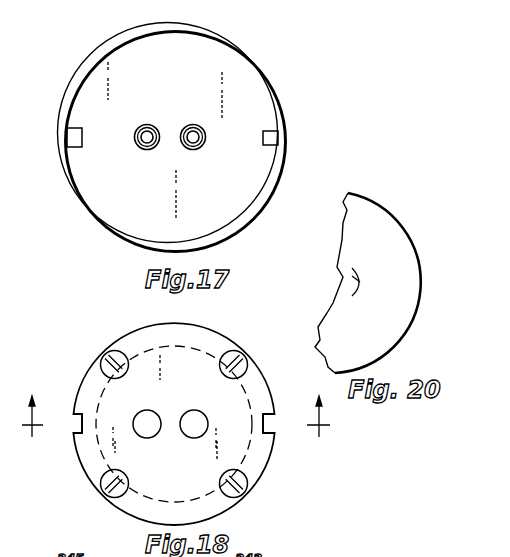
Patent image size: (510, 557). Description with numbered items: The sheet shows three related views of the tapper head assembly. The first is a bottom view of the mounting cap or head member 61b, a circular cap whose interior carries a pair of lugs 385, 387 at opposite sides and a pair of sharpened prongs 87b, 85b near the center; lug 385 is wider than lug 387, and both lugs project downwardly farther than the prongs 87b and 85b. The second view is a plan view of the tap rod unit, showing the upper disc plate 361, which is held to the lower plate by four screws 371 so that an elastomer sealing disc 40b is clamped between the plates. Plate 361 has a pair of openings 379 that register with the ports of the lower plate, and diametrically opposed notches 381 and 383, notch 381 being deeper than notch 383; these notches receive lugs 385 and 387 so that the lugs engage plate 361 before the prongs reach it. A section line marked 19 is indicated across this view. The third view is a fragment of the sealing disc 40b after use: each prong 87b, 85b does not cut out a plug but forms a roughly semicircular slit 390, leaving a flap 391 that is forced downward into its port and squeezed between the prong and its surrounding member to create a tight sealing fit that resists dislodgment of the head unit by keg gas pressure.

In FIG. 17, the mounting cap 61b is at (286, 98).
In FIG. 17, the lug 385 is at (82, 131).
In FIG. 17, the lug 387 is at (263, 139).
In FIG. 17, the prong 87b is at (143, 124).
In FIG. 17, the prong 85b is at (192, 124).
In FIG. 18, the upper disc plate 361 is at (93, 472).
In FIG. 18, the screw 371 is at (105, 342).
In FIG. 18, the openings 379 is at (187, 410).
In FIG. 18, the notch 381 is at (74, 428).
In FIG. 18, the notch 383 is at (278, 429).
In FIG. 18, the section line 19- 19 is at (178, 422).
In FIG. 20, the sealing disc 40b is at (335, 318).
In FIG. 20, the semicircular slit 390 is at (356, 271).
In FIG. 20, the flap 391 is at (364, 283).